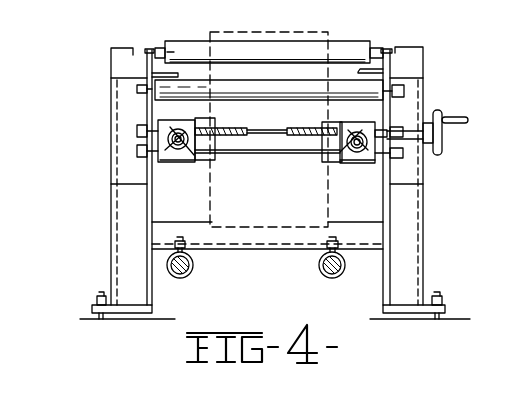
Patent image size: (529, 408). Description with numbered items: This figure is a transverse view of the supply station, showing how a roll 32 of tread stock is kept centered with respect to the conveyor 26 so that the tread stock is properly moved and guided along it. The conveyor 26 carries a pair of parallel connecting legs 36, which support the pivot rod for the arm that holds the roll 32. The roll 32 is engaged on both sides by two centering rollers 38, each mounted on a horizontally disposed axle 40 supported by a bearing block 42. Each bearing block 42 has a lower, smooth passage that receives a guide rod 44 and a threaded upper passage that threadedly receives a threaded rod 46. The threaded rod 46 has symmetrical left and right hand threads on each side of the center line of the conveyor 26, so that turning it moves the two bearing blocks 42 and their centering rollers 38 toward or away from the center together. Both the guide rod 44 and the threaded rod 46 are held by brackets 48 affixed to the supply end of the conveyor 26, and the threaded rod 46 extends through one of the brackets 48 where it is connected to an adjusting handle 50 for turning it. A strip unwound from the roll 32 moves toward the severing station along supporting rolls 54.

The conveyor 26 is at (100, 234).
The roll of tread stock 32 is at (305, 12).
The connecting legs 36 is at (193, 266).
The centering rollers 38 is at (177, 108).
The axles 40 is at (192, 158).
The bearing blocks 42 is at (192, 158).
The guide rod 44 is at (252, 158).
The threaded rod 46 is at (283, 115).
The brackets 48 is at (115, 175).
The adjusting handle 50 is at (444, 144).
The supporting rolls 54 is at (348, 41).